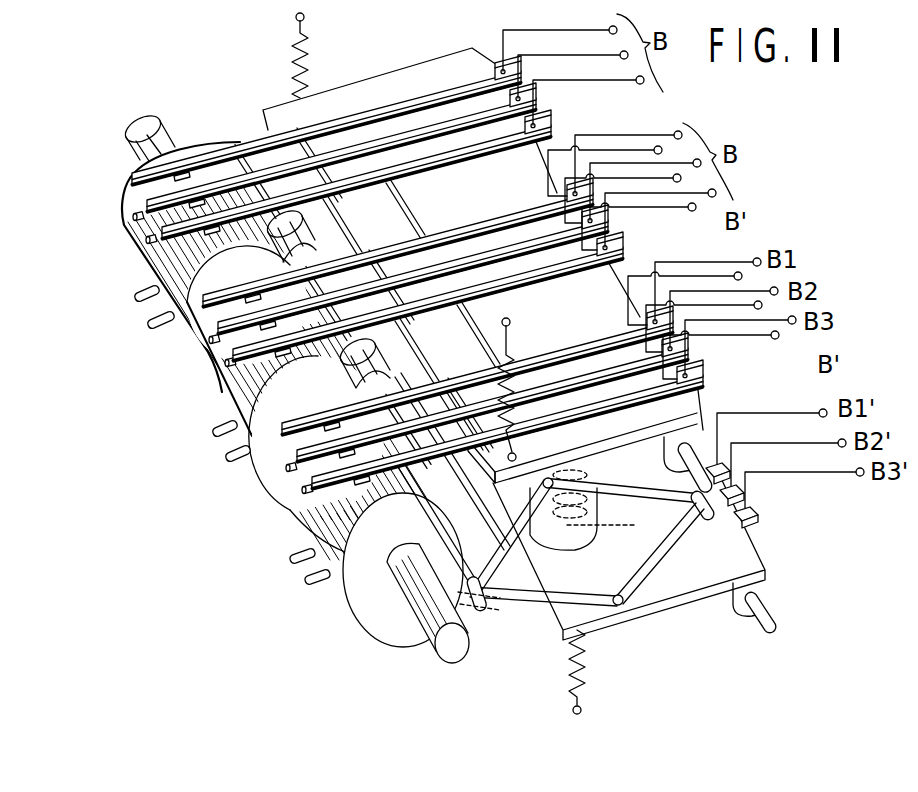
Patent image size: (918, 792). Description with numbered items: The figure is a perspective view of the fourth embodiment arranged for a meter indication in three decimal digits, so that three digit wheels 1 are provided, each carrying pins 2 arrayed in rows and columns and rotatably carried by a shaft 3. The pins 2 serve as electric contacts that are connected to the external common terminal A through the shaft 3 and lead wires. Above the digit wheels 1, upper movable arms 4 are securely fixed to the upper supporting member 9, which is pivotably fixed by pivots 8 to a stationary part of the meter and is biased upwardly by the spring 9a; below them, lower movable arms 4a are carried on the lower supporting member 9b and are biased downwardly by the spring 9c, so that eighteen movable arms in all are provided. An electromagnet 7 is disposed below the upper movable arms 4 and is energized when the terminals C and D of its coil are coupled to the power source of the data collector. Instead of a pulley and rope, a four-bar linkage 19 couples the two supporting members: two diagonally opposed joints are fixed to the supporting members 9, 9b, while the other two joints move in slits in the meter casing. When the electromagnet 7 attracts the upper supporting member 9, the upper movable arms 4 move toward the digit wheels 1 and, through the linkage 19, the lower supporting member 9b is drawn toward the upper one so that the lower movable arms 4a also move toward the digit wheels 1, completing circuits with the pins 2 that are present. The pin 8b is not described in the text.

The digit wheel 1 is at (357, 612).
The pins 2 is at (306, 565).
The shaft 3 is at (418, 603).
The movable arm 4 is at (587, 358).
The lower movable arm 4a is at (510, 612).
The electromagnet 7 is at (583, 540).
The pivot 8 is at (702, 455).
The pin 8b is at (773, 623).
The supporting member 9 is at (383, 80).
The spring 9a is at (293, 50).
The lower supporting member 9b is at (689, 583).
The spring 9c is at (568, 676).
The four-bar linkage 19 is at (676, 545).
The common terminal A is at (452, 645).
The terminal C is at (635, 395).
The terminal D is at (650, 440).